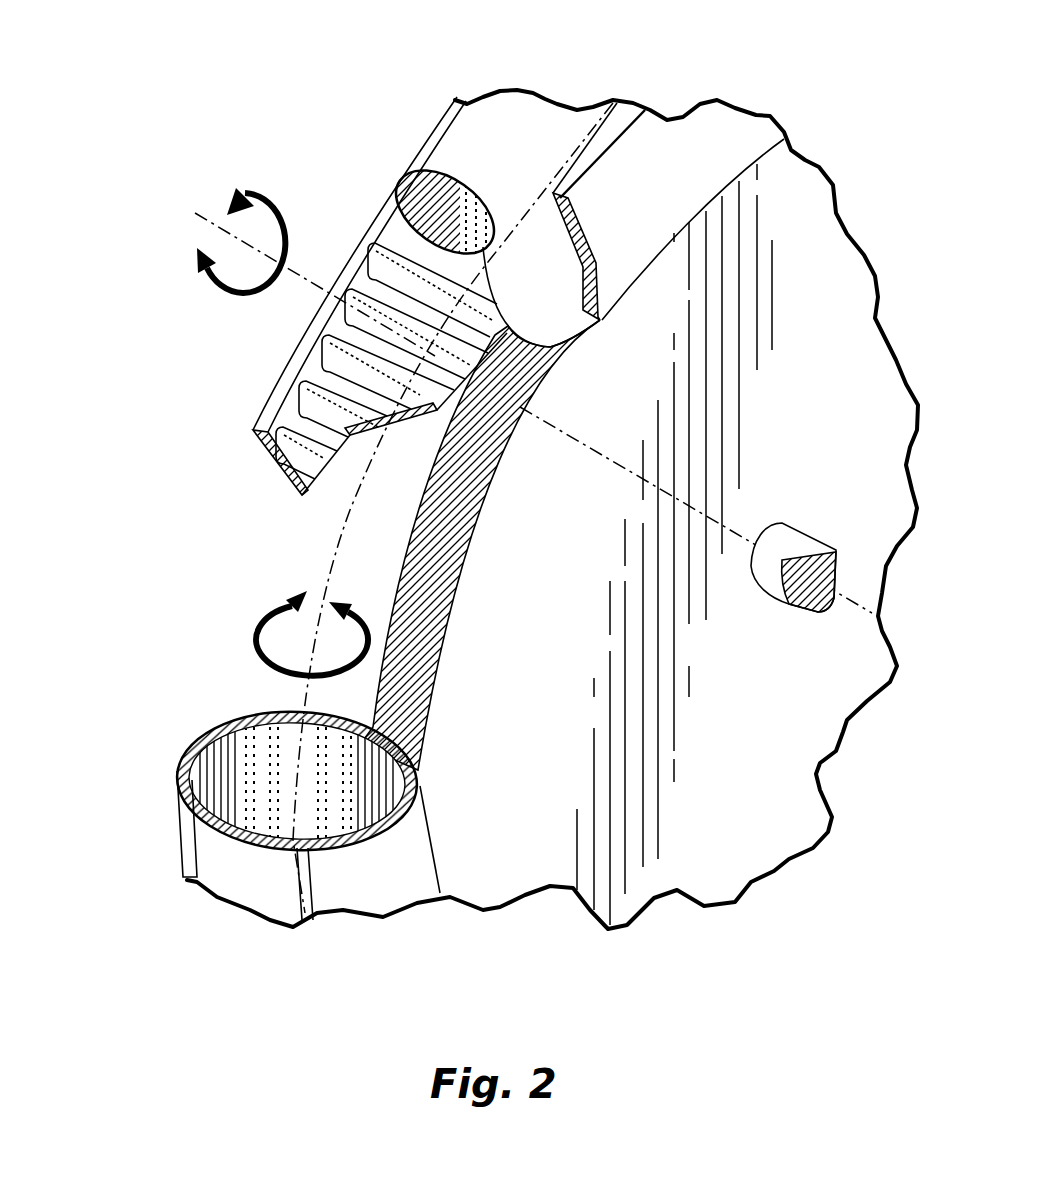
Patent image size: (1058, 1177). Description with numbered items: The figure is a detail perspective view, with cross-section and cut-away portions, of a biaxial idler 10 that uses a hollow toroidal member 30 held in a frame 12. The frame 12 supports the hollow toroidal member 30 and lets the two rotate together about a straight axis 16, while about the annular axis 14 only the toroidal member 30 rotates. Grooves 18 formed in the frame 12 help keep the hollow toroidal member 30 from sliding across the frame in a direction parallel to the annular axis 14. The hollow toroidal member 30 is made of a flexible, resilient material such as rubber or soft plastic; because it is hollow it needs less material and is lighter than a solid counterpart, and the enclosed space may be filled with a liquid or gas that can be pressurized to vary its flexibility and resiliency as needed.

The assembly 10 is at (475, 515).
The frame 12 is at (365, 233).
The annular axis 14 is at (300, 693).
The straight axis 16 is at (303, 277).
The grooves 18 is at (343, 370).
The hollow toroidal member 30 is at (507, 130).